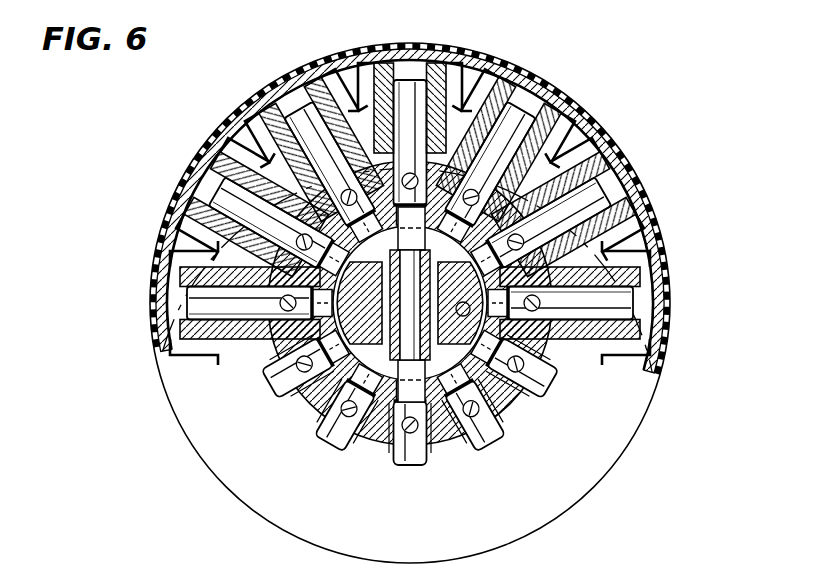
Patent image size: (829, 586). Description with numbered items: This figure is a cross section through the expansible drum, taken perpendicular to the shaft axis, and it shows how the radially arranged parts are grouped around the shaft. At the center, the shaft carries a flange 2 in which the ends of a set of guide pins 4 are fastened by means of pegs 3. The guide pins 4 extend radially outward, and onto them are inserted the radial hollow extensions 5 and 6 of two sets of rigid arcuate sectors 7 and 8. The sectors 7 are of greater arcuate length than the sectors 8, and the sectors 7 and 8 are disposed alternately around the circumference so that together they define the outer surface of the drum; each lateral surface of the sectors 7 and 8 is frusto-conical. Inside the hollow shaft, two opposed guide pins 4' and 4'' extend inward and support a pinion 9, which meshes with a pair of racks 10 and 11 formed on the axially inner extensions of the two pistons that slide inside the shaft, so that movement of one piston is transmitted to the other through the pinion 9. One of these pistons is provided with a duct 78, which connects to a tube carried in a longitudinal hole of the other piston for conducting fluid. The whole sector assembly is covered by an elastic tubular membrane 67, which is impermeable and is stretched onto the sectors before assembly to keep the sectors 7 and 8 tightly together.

The flange 2 is at (513, 407).
The pegs 3 is at (287, 322).
The guide pins 4 is at (435, 269).
The opposed guide pin 4' is at (401, 120).
The opposed guide pin 4'' is at (386, 440).
The radial hollow extension 5 is at (233, 168).
The radial hollow extension 6 is at (275, 128).
The rigid arcuate sectors 7 is at (198, 186).
The rigid arcuate sectors 8 is at (293, 100).
The pinion 9 is at (393, 318).
The rack 10 is at (357, 293).
The rack 11 is at (460, 262).
The elastic tubular membrane 67 is at (163, 247).
The duct 78 is at (462, 316).